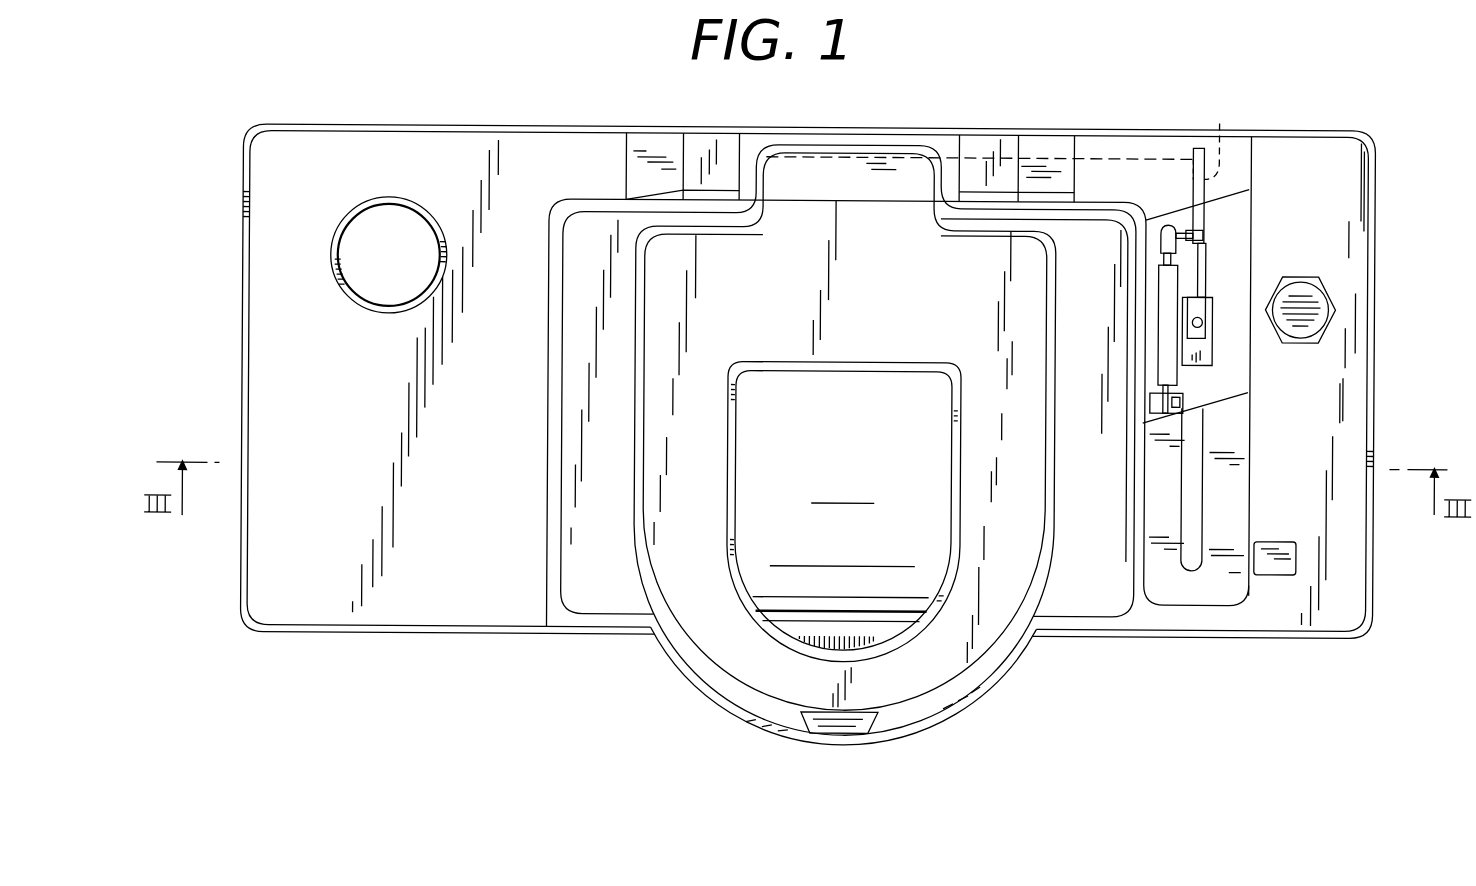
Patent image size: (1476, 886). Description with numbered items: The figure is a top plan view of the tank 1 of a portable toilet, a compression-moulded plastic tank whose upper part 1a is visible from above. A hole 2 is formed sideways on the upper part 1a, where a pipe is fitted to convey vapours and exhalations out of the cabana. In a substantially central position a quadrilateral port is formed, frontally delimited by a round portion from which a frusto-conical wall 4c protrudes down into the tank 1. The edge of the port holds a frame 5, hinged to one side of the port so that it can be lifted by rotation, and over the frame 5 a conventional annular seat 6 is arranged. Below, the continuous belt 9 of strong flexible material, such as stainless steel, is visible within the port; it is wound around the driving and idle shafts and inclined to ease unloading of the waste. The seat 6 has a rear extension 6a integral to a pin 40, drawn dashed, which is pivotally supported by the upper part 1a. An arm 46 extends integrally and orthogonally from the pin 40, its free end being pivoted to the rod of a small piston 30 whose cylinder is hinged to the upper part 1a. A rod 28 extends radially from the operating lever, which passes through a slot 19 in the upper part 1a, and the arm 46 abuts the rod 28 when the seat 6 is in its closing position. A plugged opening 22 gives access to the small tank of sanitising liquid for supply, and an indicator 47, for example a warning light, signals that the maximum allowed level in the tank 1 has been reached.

The tank 1 is at (280, 318).
The upper part 1a is at (278, 597).
The hole 2 is at (377, 240).
The frame 5 is at (603, 594).
The annular seat 6 is at (748, 665).
The rear extension 6a is at (873, 166).
The continuous belt 9 is at (928, 559).
The frusto-conical wall 4c is at (868, 646).
The slot 19 is at (1195, 495).
The plugged opening 22 is at (1327, 314).
The rod 28 is at (1200, 249).
The small piston 30 is at (1180, 280).
The pin 40 is at (1037, 151).
The arm 46 is at (1218, 125).
The indicator 47 is at (1280, 570).